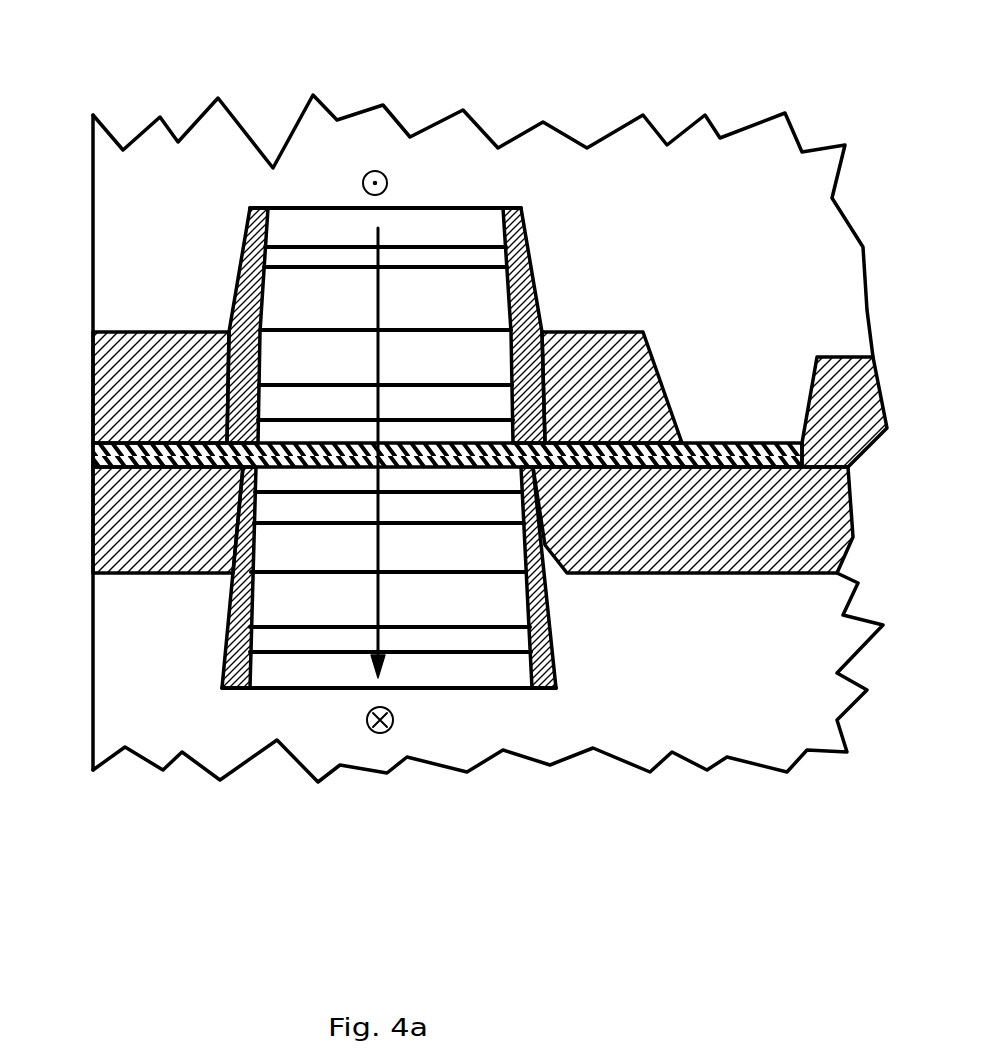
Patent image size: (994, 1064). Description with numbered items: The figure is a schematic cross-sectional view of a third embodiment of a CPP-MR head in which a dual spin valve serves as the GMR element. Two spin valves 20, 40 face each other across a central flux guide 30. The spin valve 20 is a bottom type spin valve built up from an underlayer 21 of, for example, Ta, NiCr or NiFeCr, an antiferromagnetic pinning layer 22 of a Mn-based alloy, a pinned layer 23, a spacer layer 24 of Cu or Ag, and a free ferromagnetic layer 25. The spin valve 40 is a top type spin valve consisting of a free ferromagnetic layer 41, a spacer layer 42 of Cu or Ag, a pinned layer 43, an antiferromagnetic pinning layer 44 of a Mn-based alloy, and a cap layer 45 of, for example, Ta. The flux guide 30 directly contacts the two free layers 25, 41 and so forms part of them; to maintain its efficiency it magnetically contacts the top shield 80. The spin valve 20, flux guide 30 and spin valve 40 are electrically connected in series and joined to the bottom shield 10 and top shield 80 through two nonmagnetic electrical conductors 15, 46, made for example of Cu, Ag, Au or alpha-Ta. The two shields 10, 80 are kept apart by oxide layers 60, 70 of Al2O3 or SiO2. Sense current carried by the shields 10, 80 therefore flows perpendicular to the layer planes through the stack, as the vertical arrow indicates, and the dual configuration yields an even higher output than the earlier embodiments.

The bottom shield 10 is at (120, 717).
The nonmagnetic electrical conductor 15 is at (265, 675).
The spin valve 20 is at (223, 575).
The underlayer 21 is at (296, 640).
The antiferromagnetic pinning layer 22 is at (323, 603).
The pinned layer 23 is at (410, 553).
The spacer layer 24 is at (450, 505).
The free ferromagnetic layer 25 is at (487, 475).
The flux guide 30 is at (93, 461).
The spin valve 40 is at (240, 255).
The free ferromagnetic layer 41 is at (488, 437).
The spacer layer 42 is at (480, 407).
The pinned layer 43 is at (457, 365).
The antiferromagnetic pinning layer 44 is at (433, 287).
The cap layer 45 is at (405, 257).
The nonmagnetic electrical conductor 46 is at (300, 228).
The oxide layer 60 is at (117, 537).
The oxide layer 70 is at (100, 407).
The top shield 80 is at (148, 200).